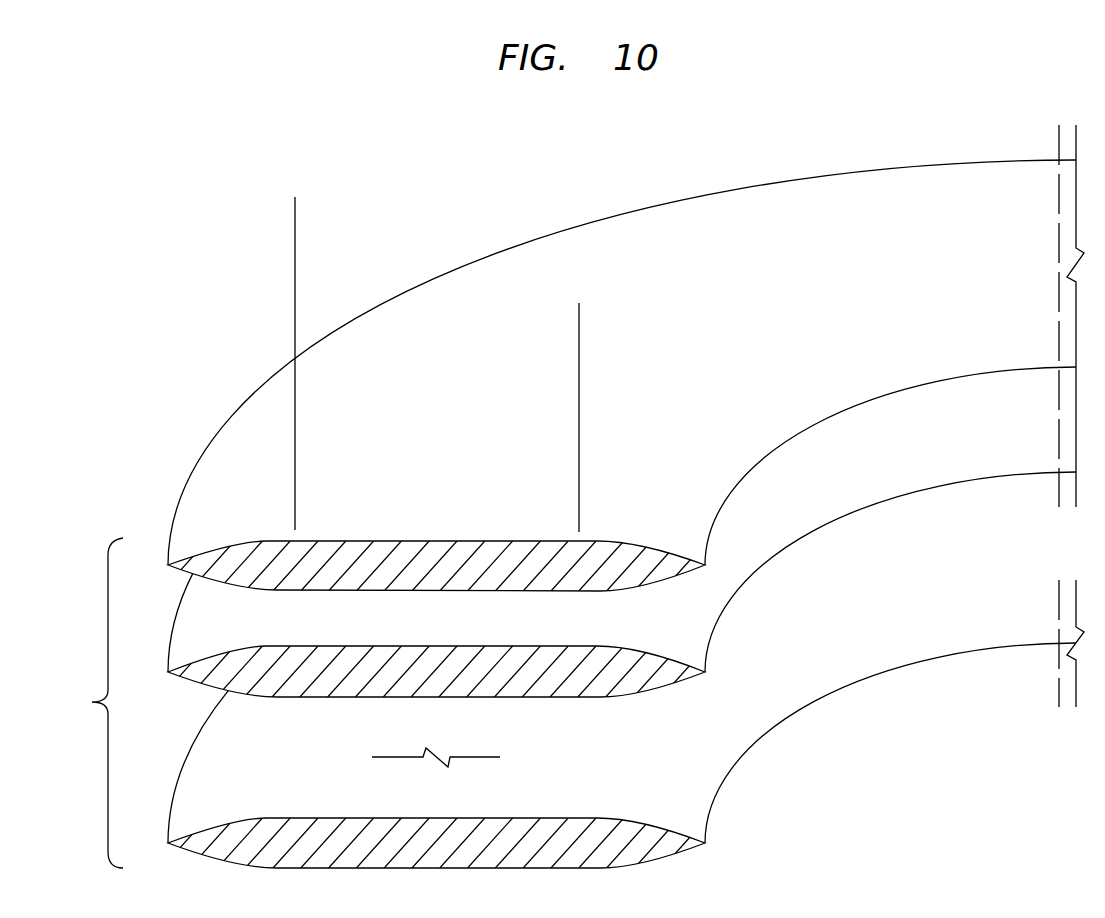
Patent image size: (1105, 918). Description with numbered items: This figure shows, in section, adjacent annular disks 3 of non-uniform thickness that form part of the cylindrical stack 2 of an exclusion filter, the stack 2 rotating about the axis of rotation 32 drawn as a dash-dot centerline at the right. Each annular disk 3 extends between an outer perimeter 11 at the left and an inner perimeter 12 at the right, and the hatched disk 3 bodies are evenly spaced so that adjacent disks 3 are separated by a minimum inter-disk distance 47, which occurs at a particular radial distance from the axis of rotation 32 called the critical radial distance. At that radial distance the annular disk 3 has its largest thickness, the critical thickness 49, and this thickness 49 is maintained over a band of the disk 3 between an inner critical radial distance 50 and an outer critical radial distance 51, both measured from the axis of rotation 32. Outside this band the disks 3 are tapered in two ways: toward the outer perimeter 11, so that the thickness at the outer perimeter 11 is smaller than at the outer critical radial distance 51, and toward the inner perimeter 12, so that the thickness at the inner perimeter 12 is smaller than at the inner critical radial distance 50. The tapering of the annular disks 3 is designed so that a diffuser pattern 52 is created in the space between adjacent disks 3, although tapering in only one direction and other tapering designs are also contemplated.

The cylindrical stack 2 is at (405, 703).
The annular disk 3 is at (877, 183).
The outer perimeter 11 is at (170, 565).
The inner perimeter 12 is at (707, 563).
The axis of rotation 32 is at (1058, 126).
The minimum inter-disk distance 47 is at (448, 591).
The critical thickness 49 is at (505, 591).
The inner critical radial distance 50 is at (579, 317).
The outer critical radial distance 51 is at (1059, 211).
The diffuser pattern 52 is at (243, 588).